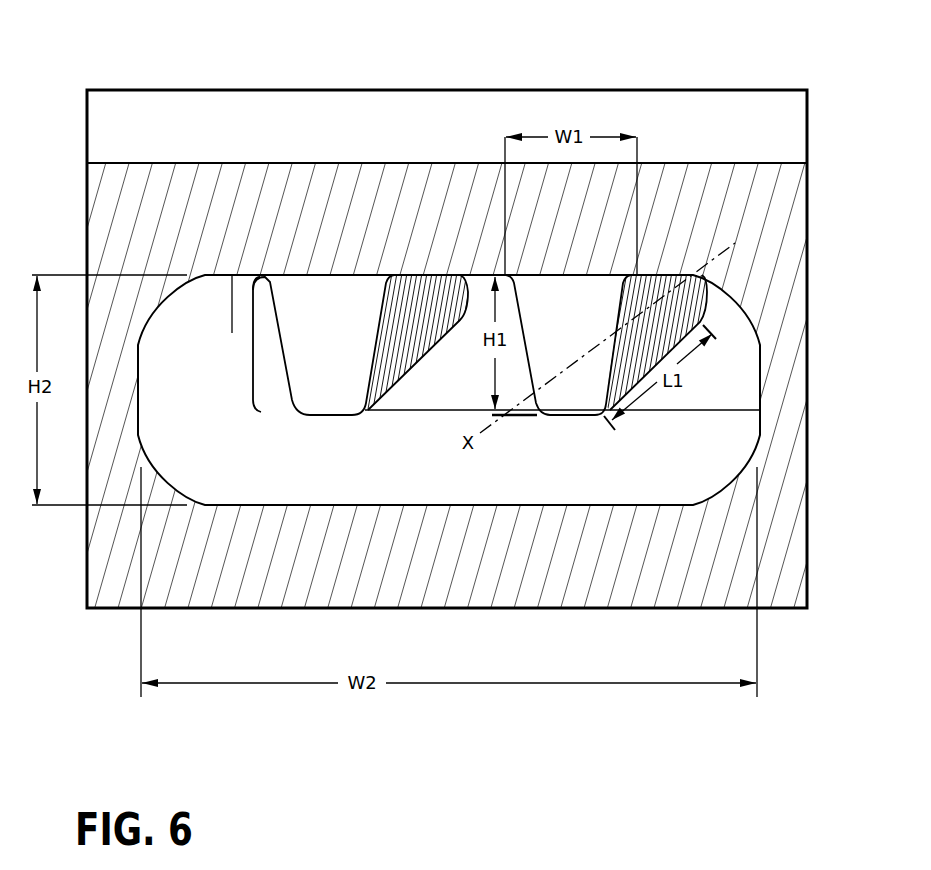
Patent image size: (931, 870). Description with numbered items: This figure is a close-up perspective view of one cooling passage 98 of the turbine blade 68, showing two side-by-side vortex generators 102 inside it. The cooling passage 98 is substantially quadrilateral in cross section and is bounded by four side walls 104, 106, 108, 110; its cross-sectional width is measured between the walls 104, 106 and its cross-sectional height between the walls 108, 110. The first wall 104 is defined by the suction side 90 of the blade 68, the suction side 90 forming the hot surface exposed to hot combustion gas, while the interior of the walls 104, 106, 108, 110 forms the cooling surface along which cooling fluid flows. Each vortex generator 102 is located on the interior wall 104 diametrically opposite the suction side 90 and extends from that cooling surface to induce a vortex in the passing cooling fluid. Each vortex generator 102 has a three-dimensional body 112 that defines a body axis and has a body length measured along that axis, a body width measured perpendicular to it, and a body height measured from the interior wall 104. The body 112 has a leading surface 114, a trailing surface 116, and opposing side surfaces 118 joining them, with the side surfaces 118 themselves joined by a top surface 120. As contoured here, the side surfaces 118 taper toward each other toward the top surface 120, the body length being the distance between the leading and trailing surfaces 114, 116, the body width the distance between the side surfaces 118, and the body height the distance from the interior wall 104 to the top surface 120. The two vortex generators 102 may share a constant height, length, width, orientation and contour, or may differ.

The blade 68 is at (130, 216).
The suction side 90 is at (413, 120).
The cooling passage 98 is at (440, 385).
The vortex generator 102 is at (340, 440).
The first wall 104 is at (242, 277).
The side wall 106 is at (437, 491).
The side wall 108 is at (180, 405).
The side wall 110 is at (762, 370).
The body 112 is at (308, 415).
The leading surface 114 is at (333, 310).
The trailing surface 116 is at (480, 273).
The side surfaces 118 is at (285, 360).
The top surface 120 is at (330, 418).